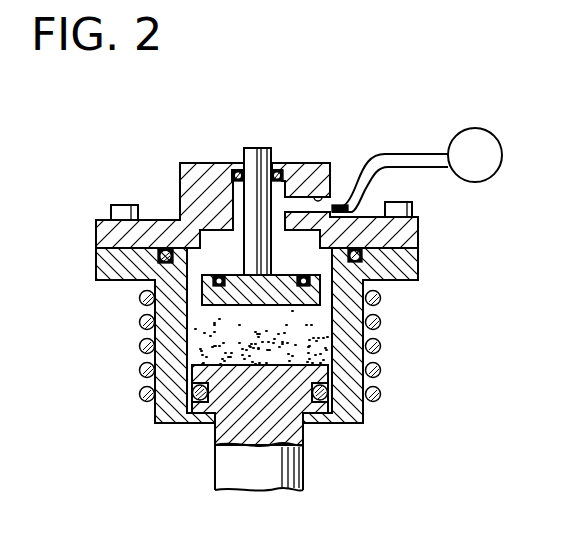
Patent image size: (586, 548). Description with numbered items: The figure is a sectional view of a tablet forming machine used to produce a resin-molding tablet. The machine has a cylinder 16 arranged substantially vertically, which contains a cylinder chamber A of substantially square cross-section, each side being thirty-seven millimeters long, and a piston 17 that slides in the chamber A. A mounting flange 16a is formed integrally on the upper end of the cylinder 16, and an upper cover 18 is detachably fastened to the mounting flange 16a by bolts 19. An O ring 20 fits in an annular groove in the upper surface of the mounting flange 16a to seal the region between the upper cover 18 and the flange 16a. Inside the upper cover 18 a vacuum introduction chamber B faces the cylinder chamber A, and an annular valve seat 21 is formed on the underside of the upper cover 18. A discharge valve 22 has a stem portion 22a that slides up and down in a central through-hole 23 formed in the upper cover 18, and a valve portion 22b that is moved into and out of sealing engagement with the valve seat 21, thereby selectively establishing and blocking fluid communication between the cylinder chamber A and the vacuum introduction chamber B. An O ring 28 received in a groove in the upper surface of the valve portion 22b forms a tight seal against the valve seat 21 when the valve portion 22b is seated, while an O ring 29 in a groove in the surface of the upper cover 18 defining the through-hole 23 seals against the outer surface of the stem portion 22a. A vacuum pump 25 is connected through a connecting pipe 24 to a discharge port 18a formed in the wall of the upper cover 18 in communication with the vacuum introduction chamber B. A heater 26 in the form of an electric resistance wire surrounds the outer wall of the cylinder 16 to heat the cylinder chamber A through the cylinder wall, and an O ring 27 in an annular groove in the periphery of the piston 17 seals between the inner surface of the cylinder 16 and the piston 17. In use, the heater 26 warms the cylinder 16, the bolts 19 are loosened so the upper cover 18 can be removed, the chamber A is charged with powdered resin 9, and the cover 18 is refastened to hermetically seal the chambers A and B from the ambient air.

The powdered resin 9 is at (188, 339).
The cylinder 16 is at (362, 410).
The mounting flange 16a is at (412, 262).
The piston 17 is at (212, 413).
The upper cover 18 is at (420, 229).
The discharge port 18a is at (333, 197).
The bolts 19 is at (413, 206).
The O ring 20 is at (166, 250).
The valve seat 21 is at (218, 235).
The discharge valve 22 is at (260, 138).
The stem portion 22a is at (281, 229).
The valve portion 22b is at (284, 289).
The central through-hole 23 is at (238, 168).
The connecting pipe 24 is at (403, 154).
The vacuum pump 25 is at (500, 141).
The heater 26 is at (380, 323).
The O ring 27 is at (322, 423).
The O ring 28 is at (220, 265).
The O ring 29 is at (276, 167).
The cylinder chamber A is at (325, 313).
The vacuum introduction chamber B is at (284, 194).